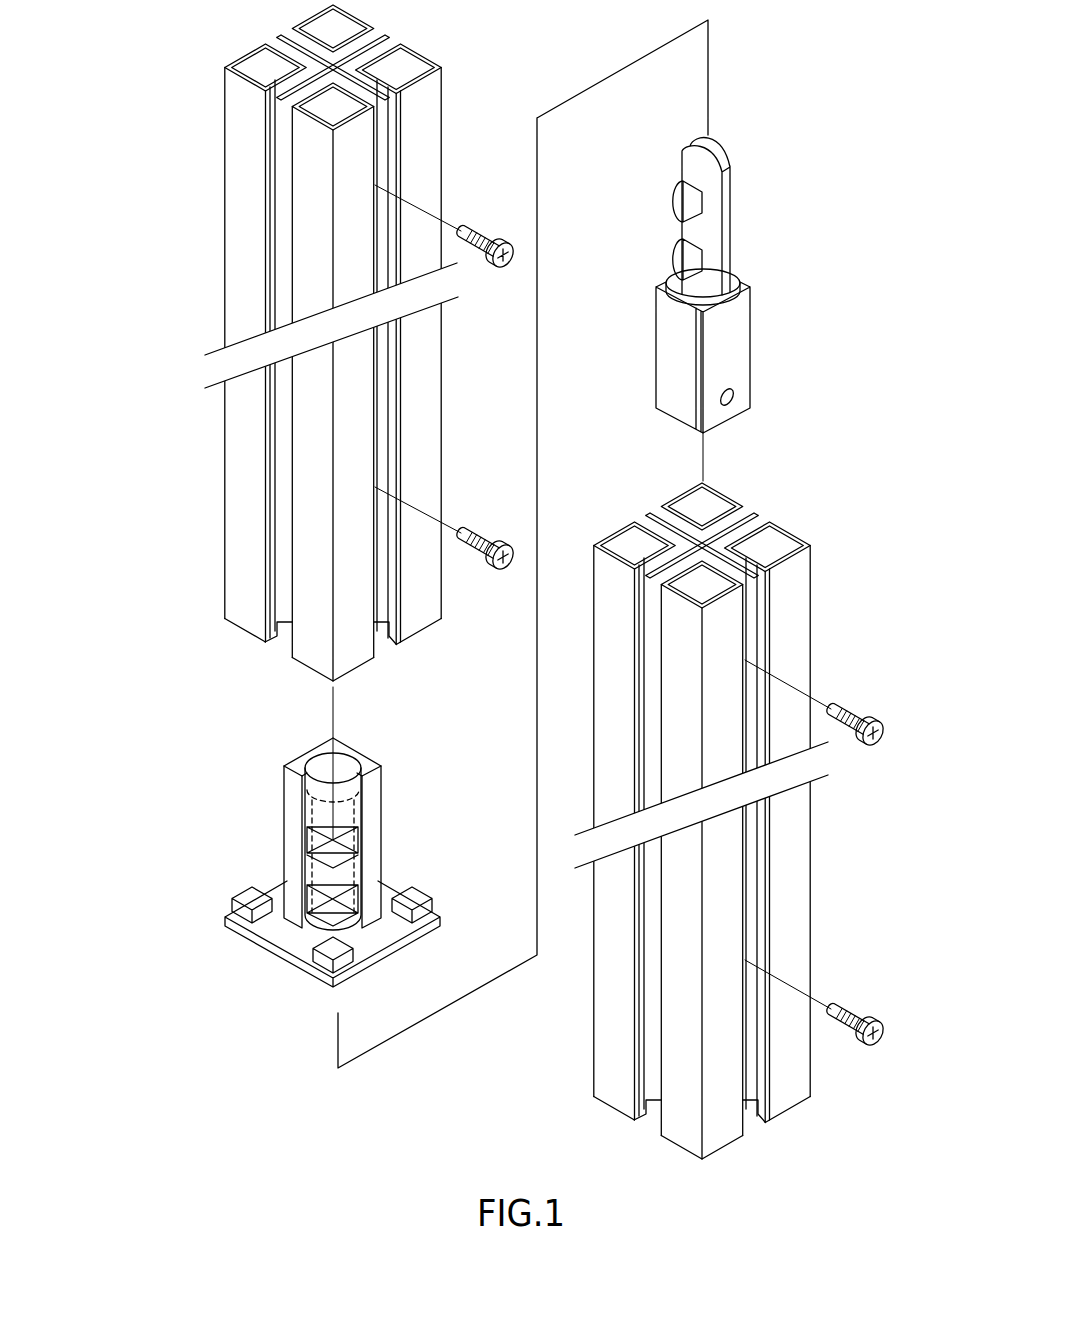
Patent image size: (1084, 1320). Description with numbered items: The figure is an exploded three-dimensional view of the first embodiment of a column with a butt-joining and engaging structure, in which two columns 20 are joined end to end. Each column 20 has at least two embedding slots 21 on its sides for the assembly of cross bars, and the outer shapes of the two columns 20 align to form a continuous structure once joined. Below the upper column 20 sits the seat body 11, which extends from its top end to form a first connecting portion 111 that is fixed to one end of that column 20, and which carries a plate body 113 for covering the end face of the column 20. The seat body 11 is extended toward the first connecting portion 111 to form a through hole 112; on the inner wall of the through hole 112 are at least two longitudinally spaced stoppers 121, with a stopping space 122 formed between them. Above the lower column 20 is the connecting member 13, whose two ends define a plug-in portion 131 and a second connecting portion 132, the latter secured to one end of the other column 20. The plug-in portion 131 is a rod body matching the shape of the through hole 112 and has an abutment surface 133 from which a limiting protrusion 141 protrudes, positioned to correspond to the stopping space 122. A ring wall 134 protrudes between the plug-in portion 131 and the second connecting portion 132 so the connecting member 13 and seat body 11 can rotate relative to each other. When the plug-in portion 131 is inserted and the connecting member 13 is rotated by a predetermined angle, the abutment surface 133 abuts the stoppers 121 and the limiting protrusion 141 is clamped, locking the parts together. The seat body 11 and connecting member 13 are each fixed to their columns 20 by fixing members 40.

The seat body 11 is at (270, 843).
The first connecting portion 111 is at (290, 812).
The through hole 112 is at (322, 763).
The plate body 113 is at (230, 912).
The stoppers 121 is at (383, 793).
The stopping space 122 is at (330, 844).
The connecting member 13 is at (724, 285).
The plug-in portion 131 is at (746, 234).
The second connecting portion 132 is at (748, 375).
The abutment surface 133 is at (695, 172).
The ring wall 134 is at (738, 279).
The limiting protrusion 141 is at (672, 262).
The column 20 is at (509, 582).
The embedding slots 21 is at (284, 172).
The fixing member 40 is at (478, 550).